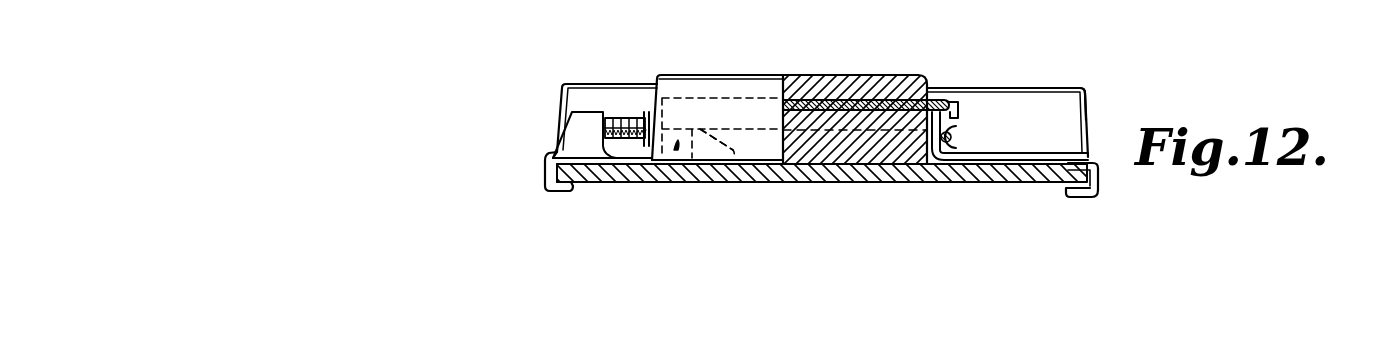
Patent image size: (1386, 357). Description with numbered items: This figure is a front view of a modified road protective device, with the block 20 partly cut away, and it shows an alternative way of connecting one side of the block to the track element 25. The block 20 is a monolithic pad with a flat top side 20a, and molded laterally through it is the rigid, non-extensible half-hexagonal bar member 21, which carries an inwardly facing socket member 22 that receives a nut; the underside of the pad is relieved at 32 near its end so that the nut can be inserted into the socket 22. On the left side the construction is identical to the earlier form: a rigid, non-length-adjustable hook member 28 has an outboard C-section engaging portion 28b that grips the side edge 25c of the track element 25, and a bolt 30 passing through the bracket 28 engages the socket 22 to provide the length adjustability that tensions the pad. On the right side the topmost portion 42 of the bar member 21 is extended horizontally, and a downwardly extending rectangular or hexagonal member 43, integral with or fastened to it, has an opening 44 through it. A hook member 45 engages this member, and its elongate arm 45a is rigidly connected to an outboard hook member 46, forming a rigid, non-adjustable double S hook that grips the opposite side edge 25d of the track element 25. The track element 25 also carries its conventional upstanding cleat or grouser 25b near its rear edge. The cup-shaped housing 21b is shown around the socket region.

The block or pad 20 is at (921, 28).
The top side of the pad 20a is at (794, 12).
The bar member 21 is at (839, 45).
The cup / receptacle 21b is at (731, 116).
The socket member 22 is at (652, 185).
The track element 25 is at (836, 183).
The cleat or grouser 25b is at (1104, 52).
The side edge of track element 25c is at (556, 164).
The side edge of track element 25d is at (1180, 192).
The hook member 28 is at (563, 136).
The C-section engaging portion 28b is at (546, 187).
The bolt 30 is at (614, 118).
The relief in the pad underside 32 is at (726, 188).
The extended topmost portion of bar member 42 is at (931, 97).
The downwardly extending member 43 is at (951, 138).
The opening or perforation 44 is at (955, 110).
The hook member 45 is at (937, 153).
The elongate arm 45a is at (1060, 152).
The outboard hook member 46 is at (1100, 175).